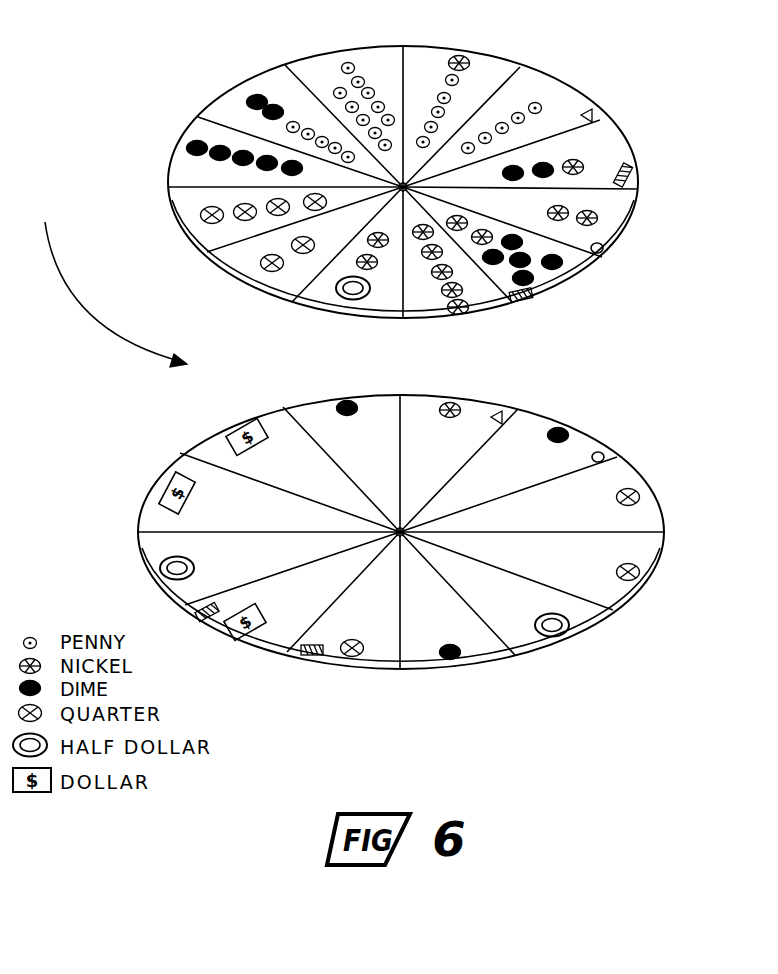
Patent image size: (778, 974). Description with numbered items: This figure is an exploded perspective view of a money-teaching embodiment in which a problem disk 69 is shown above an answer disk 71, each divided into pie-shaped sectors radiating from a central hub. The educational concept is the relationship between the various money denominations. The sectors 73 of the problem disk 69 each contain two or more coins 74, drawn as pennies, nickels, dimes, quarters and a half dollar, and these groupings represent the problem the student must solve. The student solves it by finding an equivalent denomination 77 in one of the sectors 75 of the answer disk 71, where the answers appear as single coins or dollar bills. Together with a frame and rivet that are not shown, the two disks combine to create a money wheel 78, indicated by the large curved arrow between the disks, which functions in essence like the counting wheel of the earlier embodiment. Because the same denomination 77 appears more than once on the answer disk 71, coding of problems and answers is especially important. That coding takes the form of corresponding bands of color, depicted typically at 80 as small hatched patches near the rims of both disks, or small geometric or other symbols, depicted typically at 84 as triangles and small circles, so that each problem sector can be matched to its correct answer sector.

The problem disk 69 is at (430, 54).
The answer disk 71 is at (601, 627).
The sectors of the problem disk 73 is at (504, 217).
The coins 74 is at (343, 64).
The sectors of the answer disk 75 is at (362, 470).
The equivalent denomination 77 is at (565, 430).
The money wheel 78 is at (112, 283).
The bands of color 80 is at (632, 170).
The geometric or other symbols 84 is at (595, 110).